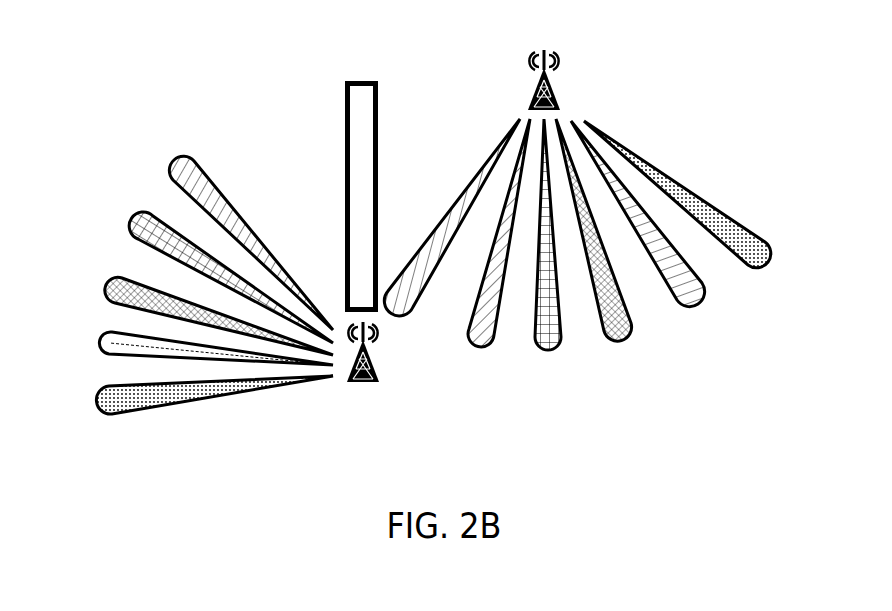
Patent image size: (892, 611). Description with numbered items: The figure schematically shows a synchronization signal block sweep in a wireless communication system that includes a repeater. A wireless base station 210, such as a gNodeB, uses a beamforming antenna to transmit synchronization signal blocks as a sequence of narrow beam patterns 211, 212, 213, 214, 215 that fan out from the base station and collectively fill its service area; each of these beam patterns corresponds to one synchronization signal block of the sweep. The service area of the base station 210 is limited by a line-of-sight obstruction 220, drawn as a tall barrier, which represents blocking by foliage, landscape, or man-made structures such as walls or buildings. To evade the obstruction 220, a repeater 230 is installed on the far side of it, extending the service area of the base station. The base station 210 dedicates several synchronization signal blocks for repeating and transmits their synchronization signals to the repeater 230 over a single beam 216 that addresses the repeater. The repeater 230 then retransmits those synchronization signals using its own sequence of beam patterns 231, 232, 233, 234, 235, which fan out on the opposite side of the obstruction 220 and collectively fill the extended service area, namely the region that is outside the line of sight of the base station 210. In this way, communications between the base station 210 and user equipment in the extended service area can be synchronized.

The base station 210 is at (563, 77).
The beam pattern 211 is at (491, 246).
The beam pattern 212 is at (548, 249).
The beam pattern 213 is at (600, 246).
The beam pattern 214 is at (649, 228).
The beam pattern 215 is at (698, 200).
The single beam 216 is at (452, 217).
The obstruction 220 is at (350, 183).
The repeater 230 is at (366, 364).
The beam pattern 231 is at (233, 231).
The beam pattern 232 is at (211, 272).
The beam pattern 233 is at (197, 311).
The beam pattern 234 is at (195, 347).
The beam pattern 235 is at (192, 397).